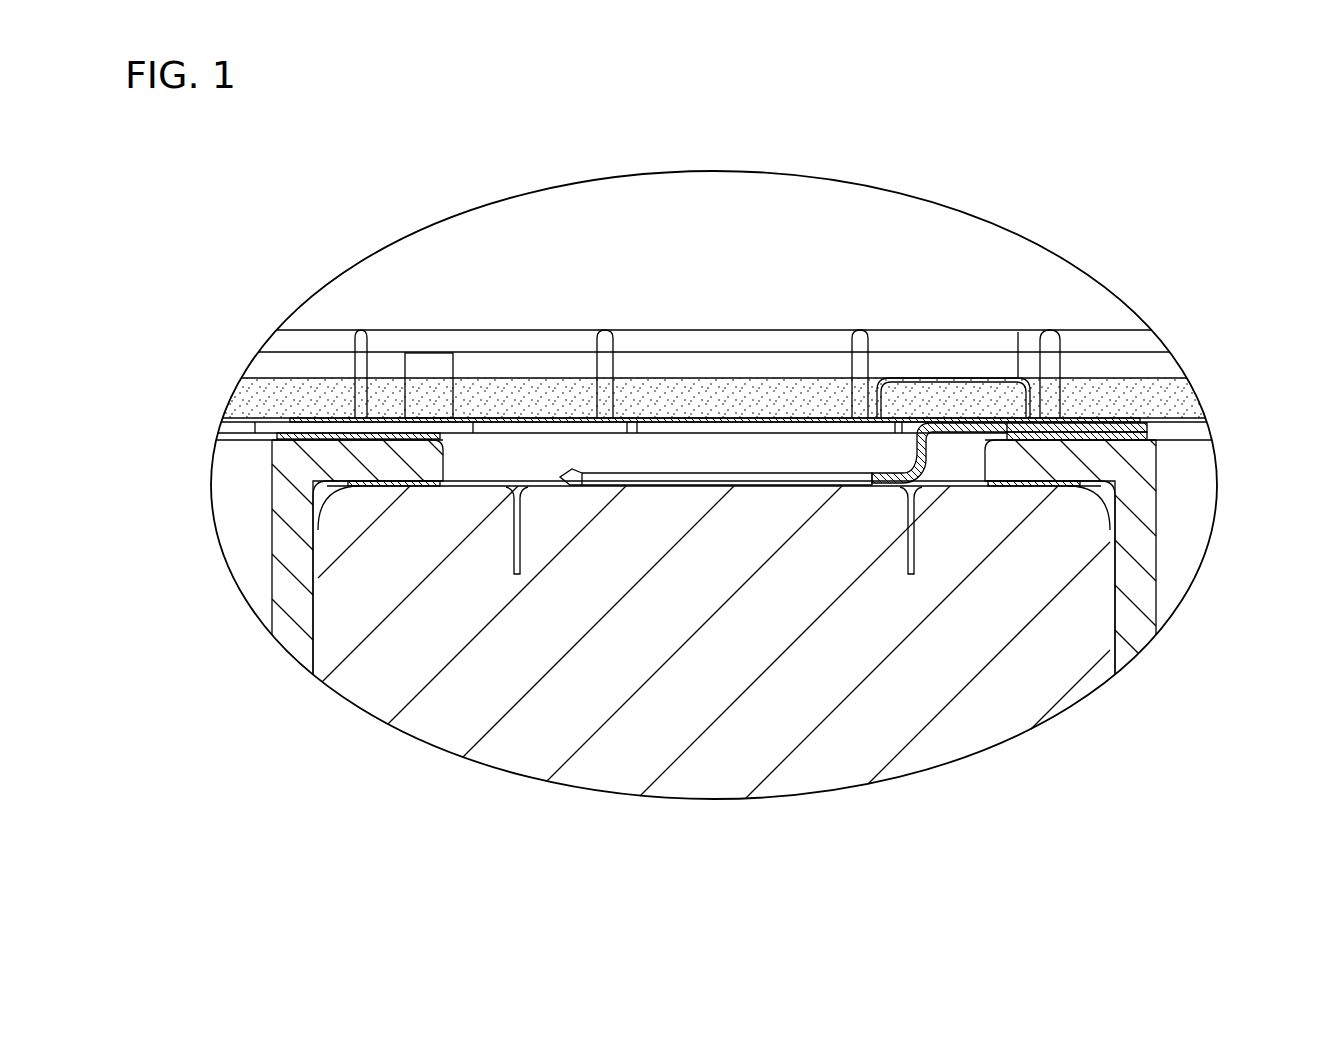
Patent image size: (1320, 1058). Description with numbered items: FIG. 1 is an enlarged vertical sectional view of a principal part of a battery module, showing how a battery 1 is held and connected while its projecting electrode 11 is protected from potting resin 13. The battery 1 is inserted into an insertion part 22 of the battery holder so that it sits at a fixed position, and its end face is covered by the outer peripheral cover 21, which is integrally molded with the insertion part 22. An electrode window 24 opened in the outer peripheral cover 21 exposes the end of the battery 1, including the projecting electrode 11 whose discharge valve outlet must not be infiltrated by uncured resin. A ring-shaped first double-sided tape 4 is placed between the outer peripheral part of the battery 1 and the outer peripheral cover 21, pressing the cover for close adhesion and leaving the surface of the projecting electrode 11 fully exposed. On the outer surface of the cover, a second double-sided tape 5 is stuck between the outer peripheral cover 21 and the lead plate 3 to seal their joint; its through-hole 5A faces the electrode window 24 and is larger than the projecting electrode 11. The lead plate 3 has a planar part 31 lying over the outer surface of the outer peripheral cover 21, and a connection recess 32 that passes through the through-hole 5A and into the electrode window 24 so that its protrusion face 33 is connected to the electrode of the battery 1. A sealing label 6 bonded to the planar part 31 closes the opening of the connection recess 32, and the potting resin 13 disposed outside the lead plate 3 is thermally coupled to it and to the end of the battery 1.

The battery 1 is at (697, 711).
The lead plate 3 is at (335, 130).
The first double-sided tape 4 is at (1107, 515).
The second double-sided tape 5 is at (1078, 433).
The through-hole 5A is at (422, 427).
The sealing label 6 is at (556, 397).
The projecting electrode 11 is at (754, 522).
The potting resin 13 is at (495, 393).
The outer peripheral cover 21 is at (1032, 471).
The insertion part 22 is at (1142, 578).
The electrode window 24 is at (1000, 410).
The planar part 31 is at (984, 438).
The connection recess 32 is at (811, 446).
The protrusion face 33 is at (704, 481).